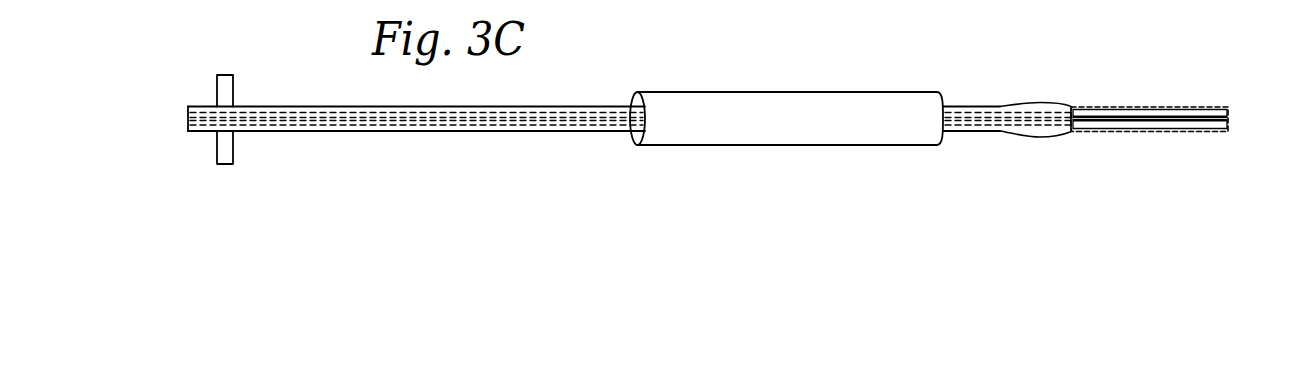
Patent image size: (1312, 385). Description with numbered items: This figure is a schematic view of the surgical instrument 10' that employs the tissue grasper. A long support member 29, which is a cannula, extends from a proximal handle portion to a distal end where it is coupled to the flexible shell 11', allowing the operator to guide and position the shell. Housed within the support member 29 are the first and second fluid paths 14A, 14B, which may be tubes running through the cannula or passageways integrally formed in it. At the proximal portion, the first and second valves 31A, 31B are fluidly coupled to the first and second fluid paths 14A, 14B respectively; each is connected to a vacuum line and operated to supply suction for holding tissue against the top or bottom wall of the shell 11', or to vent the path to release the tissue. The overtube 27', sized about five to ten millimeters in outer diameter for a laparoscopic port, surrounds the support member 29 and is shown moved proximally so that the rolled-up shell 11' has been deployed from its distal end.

The catheter device 10' is at (708, 96).
The first valve 31A is at (233, 94).
The second valve 31B is at (233, 147).
The first fluid path 14A is at (978, 107).
The second fluid path 14B is at (978, 128).
The overtube 27' is at (786, 94).
The support member 29 is at (1037, 138).
The flexible shell 11' is at (1149, 147).